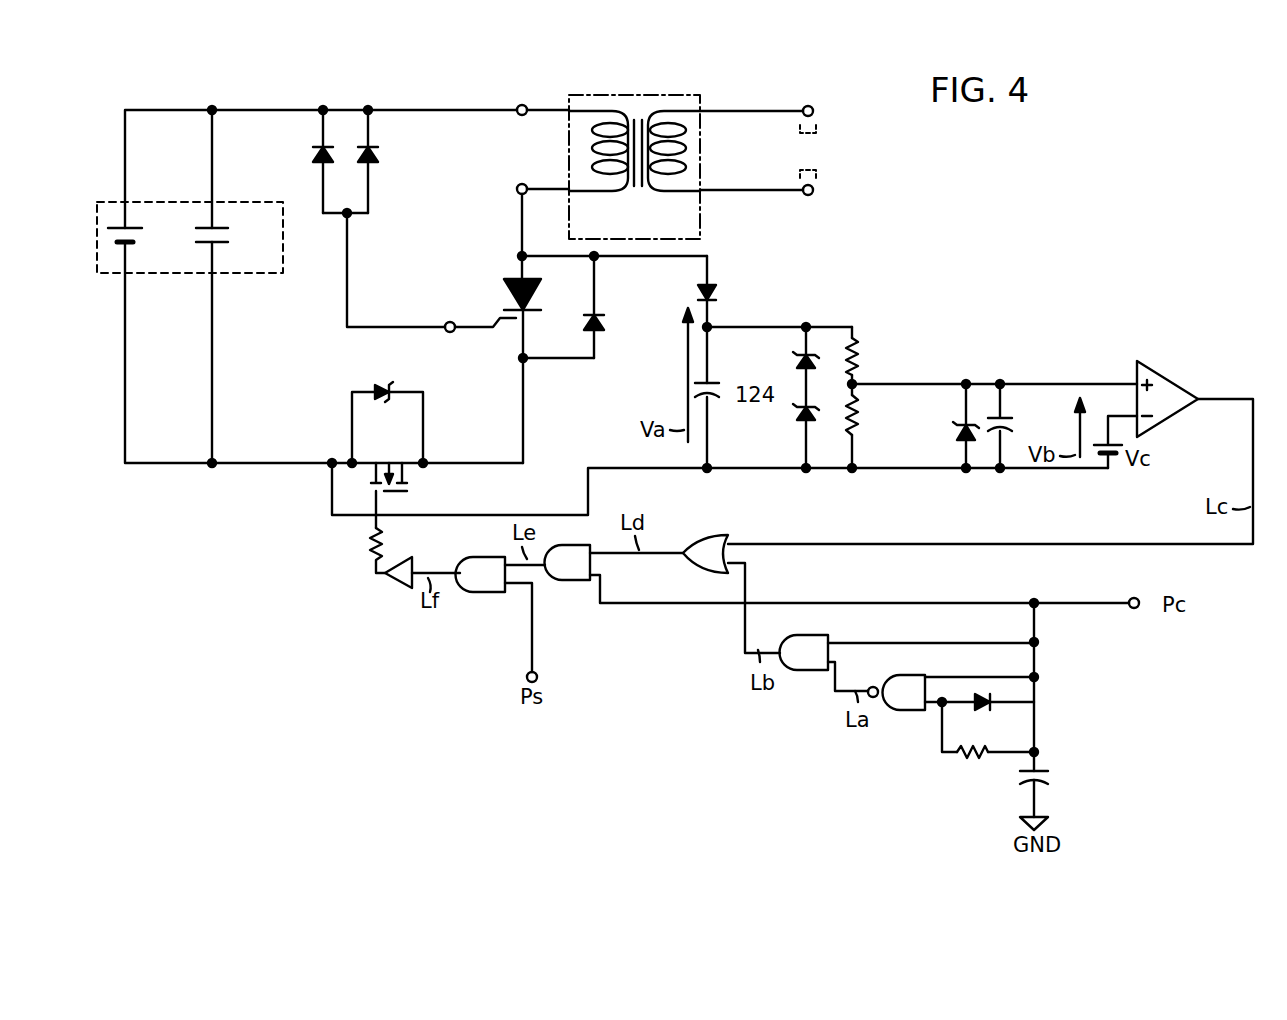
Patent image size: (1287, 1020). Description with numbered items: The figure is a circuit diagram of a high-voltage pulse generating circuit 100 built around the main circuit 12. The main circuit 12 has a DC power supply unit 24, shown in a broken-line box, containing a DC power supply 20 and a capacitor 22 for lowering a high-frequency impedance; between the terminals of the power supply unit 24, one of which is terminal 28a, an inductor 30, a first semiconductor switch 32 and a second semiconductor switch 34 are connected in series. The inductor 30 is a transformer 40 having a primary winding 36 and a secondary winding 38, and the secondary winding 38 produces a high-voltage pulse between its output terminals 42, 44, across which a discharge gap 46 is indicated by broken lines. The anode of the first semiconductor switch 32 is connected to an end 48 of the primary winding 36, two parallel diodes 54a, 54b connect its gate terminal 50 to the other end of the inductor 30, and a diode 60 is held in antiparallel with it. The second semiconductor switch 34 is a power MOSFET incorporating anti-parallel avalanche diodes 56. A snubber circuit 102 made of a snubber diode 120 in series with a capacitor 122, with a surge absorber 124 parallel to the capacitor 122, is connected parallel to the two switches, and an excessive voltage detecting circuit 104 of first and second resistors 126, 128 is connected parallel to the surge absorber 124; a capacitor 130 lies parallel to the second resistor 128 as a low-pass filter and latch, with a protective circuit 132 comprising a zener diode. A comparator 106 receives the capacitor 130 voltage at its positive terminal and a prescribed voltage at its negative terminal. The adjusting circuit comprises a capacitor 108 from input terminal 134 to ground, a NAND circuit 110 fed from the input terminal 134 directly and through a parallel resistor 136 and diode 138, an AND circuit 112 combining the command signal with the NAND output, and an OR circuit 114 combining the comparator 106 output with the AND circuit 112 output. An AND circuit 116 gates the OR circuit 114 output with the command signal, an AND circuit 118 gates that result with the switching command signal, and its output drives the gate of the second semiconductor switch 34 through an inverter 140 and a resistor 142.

The main circuit 12 is at (418, 82).
The DC power supply 20 is at (138, 238).
The capacitor 22 is at (230, 236).
The DC power supply unit 24 is at (172, 202).
The terminal 28a is at (522, 104).
The inductor 30 is at (703, 217).
The first semiconductor switch 32 is at (504, 296).
The second semiconductor switch 34 is at (371, 460).
The primary winding 36 is at (592, 150).
The secondary winding 38 is at (688, 150).
The transformer 40 is at (637, 114).
The output terminal 42 is at (808, 105).
The output terminal 44 is at (808, 196).
The discharge gap 46 is at (824, 150).
The end of the inductor 48 is at (516, 189).
The gate terminal 50 is at (450, 333).
The diode 54a is at (378, 160).
The diode 54b is at (312, 152).
The avalanche diodes 56 is at (383, 400).
The diode 60 is at (580, 328).
The high-voltage pulse generating circuit 100 is at (984, 142).
The snubber circuit 102 is at (736, 309).
The excessive voltage detecting circuit 104 is at (872, 342).
The comparator 106 is at (1166, 385).
The capacitor 108 is at (1052, 776).
The NAND circuit 110 is at (908, 712).
The AND circuit 112 is at (803, 675).
The OR circuit 114 is at (704, 538).
The AND circuit 116 is at (580, 585).
The AND circuit 118 is at (492, 594).
The snubber diode 120 is at (696, 295).
The capacitor 122 is at (715, 400).
The surge absorber 124 is at (786, 435).
The first resistor 126 is at (862, 352).
The second resistor 128 is at (862, 412).
The capacitor 130 is at (1015, 423).
The protective circuit 132 is at (950, 447).
The input terminal 134 is at (1134, 597).
The resistor 136 is at (971, 760).
The diode 138 is at (985, 712).
The inverter 140 is at (398, 588).
The resistor 142 is at (370, 540).